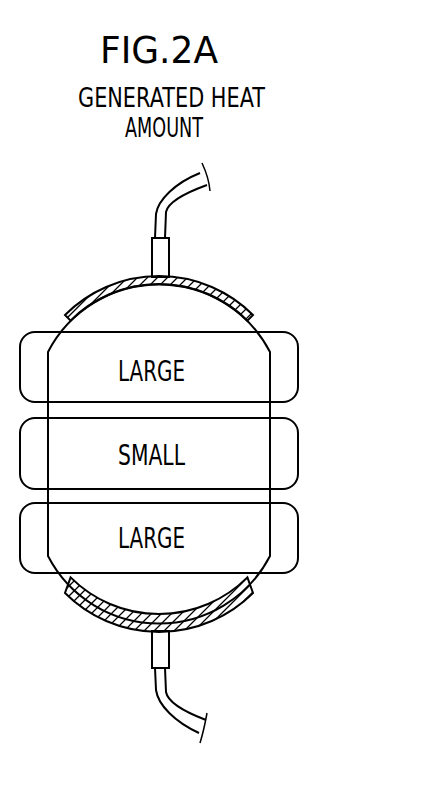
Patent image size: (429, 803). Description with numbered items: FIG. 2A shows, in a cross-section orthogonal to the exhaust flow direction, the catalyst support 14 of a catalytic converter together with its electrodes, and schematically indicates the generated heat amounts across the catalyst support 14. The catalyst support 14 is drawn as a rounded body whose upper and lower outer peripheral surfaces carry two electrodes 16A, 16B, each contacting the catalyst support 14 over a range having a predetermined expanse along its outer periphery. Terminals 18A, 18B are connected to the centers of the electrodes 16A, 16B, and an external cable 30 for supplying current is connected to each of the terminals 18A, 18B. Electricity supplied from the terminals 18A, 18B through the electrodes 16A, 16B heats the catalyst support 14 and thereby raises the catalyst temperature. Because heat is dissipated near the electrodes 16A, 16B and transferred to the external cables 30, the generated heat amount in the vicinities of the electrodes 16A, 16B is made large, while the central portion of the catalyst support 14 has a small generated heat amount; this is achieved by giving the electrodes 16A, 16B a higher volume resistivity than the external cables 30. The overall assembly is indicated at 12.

The heat generating device 12 is at (60, 291).
The catalyst support 14 is at (270, 543).
The electrode 16A is at (110, 285).
The electrode 16B is at (88, 613).
The terminal 18A is at (168, 257).
The terminal 18B is at (169, 647).
The external cable 30 is at (172, 193).